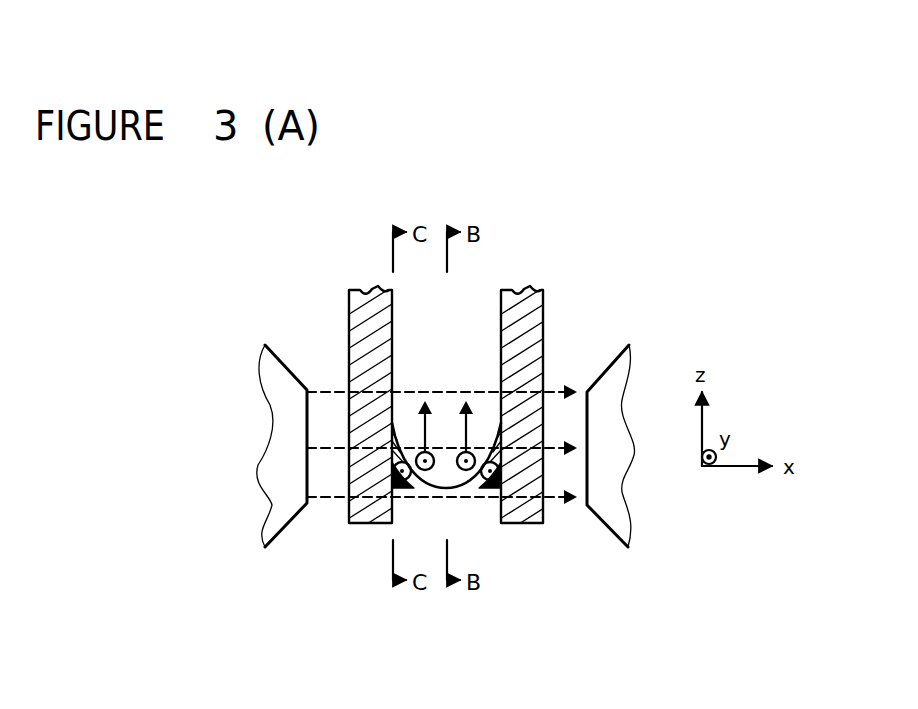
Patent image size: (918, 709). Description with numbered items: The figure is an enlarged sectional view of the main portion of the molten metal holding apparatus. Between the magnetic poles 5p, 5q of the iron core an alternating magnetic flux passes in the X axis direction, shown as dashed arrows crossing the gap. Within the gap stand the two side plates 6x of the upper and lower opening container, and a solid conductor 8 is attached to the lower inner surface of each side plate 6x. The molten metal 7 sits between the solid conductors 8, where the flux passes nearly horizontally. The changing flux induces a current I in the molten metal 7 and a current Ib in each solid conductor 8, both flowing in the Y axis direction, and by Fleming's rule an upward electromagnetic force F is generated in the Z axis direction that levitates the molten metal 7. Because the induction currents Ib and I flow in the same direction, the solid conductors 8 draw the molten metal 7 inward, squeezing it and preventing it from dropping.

The side plate 6x is at (377, 290).
The molten metal 7 is at (453, 309).
The solid conductor 8 is at (402, 461).
The electromagnetic force F is at (431, 408).
The magnetic pole 5p is at (277, 446).
The magnetic pole 5q is at (622, 476).
The induction current Ib is at (402, 481).
The induction current I is at (430, 468).